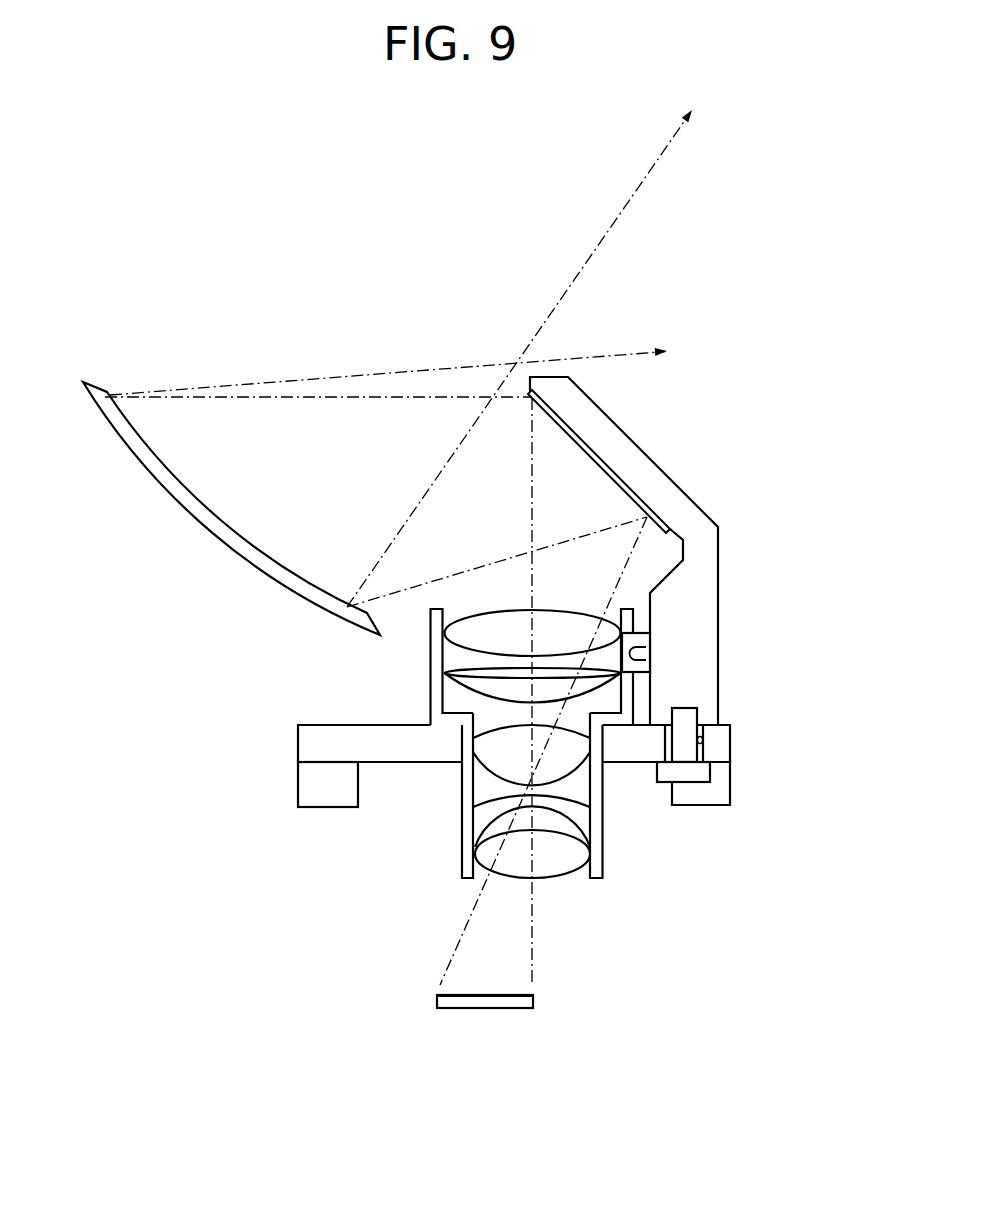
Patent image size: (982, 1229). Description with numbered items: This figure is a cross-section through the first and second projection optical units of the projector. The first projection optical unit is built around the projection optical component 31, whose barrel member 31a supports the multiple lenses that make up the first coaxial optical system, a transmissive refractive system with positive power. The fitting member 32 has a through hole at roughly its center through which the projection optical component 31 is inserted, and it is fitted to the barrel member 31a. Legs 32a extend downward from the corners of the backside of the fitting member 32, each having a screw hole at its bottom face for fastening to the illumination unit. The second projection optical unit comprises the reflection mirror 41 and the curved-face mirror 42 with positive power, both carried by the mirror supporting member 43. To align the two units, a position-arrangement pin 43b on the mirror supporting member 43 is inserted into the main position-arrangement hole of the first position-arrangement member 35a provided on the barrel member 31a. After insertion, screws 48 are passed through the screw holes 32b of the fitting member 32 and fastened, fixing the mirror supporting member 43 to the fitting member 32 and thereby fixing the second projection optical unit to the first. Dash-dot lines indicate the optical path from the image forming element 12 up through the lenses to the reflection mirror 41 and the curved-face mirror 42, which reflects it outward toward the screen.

The image sensor 12 is at (470, 1010).
The projection optical component 31 is at (559, 757).
The barrel member 31a is at (605, 840).
The fitting member 32 is at (291, 745).
The leg 32a is at (298, 782).
The screw hole 32b is at (703, 741).
The first position-arrangement member 35a is at (644, 632).
The reflection mirror 41 is at (592, 458).
The curved-face mirror 42 is at (187, 521).
The mirror supporting member 43 is at (719, 561).
The position-arrangement pin 43b is at (648, 652).
The screw 48 is at (658, 766).